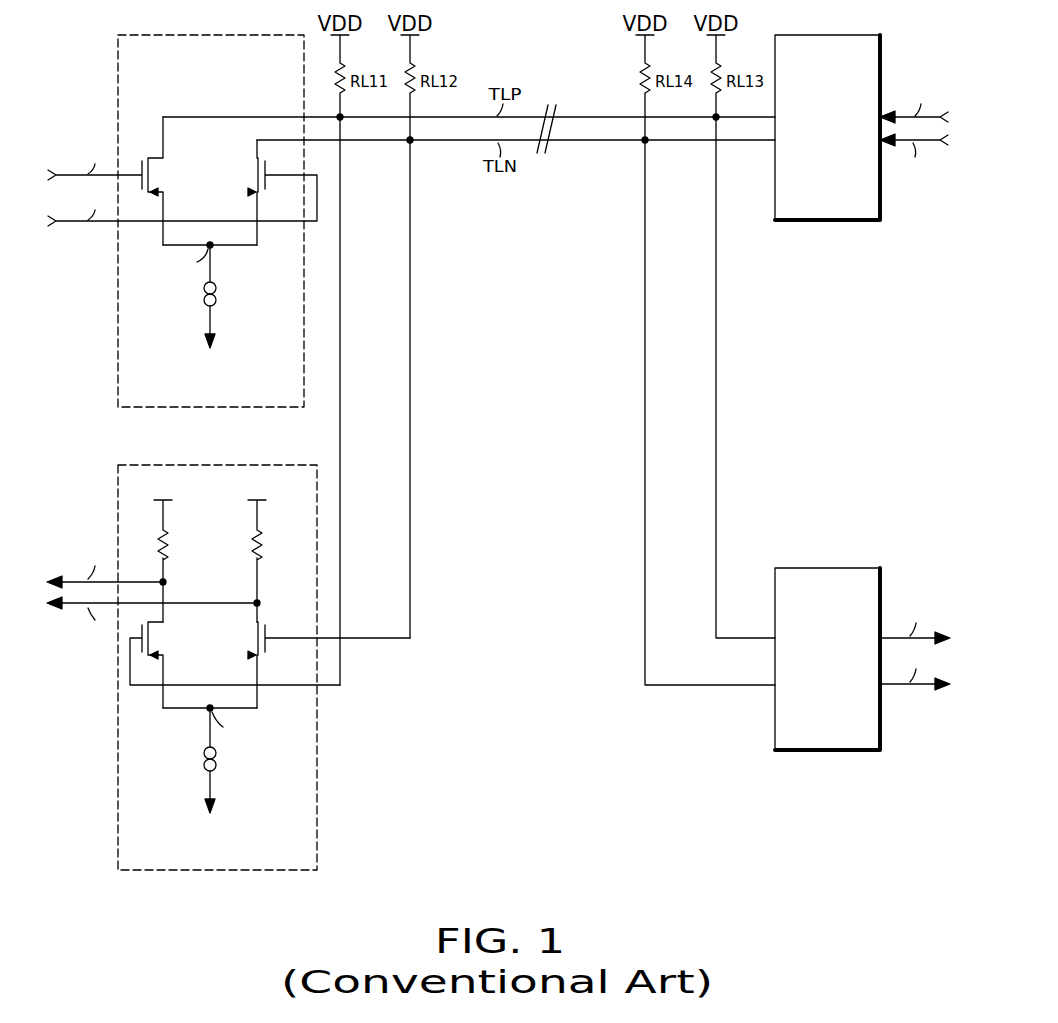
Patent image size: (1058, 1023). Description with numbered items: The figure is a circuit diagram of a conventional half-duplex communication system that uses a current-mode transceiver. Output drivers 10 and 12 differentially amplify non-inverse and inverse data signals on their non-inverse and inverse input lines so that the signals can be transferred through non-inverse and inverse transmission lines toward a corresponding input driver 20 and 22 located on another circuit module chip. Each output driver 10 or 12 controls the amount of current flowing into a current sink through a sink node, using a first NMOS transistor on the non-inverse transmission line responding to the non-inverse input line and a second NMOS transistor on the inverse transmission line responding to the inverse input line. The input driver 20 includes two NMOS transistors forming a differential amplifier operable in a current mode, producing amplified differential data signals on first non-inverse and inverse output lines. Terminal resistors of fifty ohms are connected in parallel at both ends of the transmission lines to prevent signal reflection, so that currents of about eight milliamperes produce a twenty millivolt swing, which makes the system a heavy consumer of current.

The output driver 10 is at (209, 34).
The output driver 12 is at (823, 34).
The input driver 20 is at (210, 464).
The input driver 22 is at (822, 567).